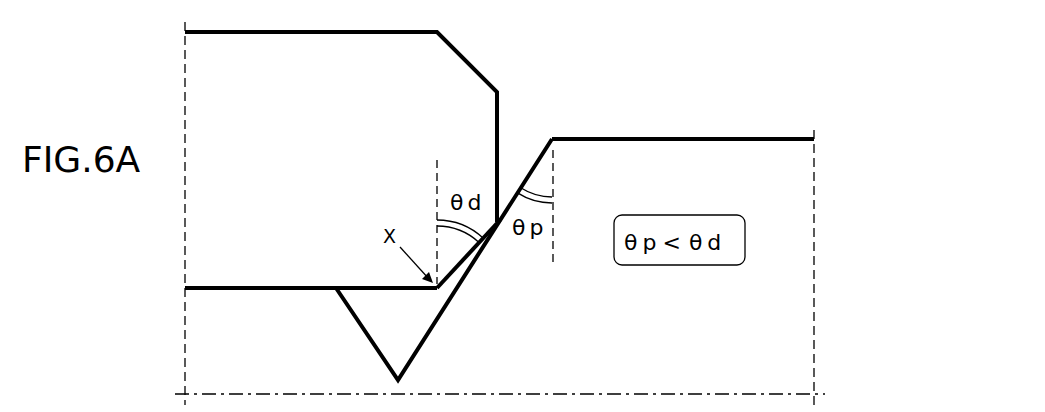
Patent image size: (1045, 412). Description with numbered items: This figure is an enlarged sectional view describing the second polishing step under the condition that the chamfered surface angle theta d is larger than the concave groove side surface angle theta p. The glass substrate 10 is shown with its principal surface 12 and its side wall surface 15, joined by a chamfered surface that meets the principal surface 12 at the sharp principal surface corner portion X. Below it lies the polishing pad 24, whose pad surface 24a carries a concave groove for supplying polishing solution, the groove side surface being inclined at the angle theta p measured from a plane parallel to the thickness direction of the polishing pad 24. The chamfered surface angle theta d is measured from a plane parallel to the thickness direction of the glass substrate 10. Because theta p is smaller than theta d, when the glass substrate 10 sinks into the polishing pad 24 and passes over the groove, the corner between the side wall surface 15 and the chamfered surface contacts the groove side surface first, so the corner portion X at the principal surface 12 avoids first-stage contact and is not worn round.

The glass substrate 10 is at (493, 77).
The principal surface 12 is at (385, 290).
The side wall surface 15 is at (497, 128).
The polishing pad 24 is at (735, 134).
The pad surface 24a is at (641, 137).